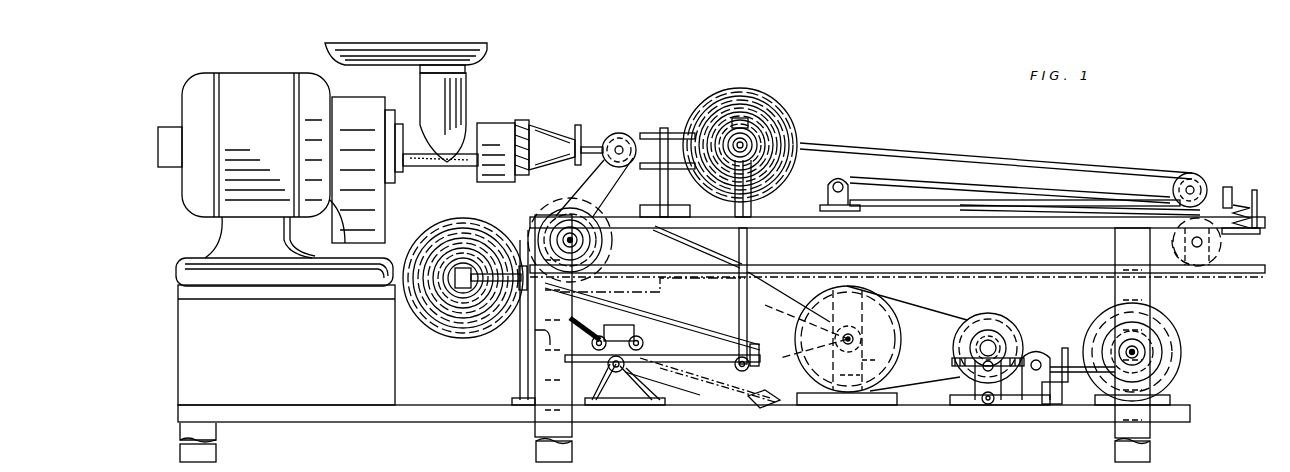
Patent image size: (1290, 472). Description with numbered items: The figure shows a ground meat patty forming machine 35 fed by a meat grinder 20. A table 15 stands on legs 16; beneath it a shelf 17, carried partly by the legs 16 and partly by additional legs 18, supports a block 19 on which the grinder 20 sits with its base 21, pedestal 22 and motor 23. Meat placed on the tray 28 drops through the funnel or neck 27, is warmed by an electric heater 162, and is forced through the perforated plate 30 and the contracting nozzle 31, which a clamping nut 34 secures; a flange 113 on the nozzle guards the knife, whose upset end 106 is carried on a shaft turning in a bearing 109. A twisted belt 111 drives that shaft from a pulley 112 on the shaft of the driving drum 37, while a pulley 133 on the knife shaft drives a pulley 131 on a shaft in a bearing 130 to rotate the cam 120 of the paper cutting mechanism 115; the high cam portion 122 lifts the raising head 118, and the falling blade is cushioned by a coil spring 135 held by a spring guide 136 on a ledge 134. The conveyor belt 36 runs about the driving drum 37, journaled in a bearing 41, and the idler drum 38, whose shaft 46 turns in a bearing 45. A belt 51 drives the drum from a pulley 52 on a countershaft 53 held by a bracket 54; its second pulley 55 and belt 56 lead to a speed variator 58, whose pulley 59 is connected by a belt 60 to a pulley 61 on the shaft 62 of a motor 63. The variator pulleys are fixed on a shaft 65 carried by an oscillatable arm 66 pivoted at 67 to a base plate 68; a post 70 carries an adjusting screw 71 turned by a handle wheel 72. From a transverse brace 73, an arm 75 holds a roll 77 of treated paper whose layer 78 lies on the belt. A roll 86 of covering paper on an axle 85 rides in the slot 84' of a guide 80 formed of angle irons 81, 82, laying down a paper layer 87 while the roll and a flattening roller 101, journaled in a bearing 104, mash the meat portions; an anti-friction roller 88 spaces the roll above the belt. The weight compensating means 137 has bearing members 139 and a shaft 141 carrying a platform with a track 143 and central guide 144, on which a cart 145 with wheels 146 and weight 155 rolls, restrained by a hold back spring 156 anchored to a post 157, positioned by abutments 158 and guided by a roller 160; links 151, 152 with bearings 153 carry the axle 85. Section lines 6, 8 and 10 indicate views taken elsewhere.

The meat grinder 20 is at (175, 62).
The motor 23 is at (258, 88).
The pedestal 22 is at (236, 244).
The base 21 is at (188, 262).
The supporting block 19 is at (388, 355).
The additional legs or supports 18 is at (218, 440).
The shelf 17 is at (442, 424).
The legs or supports 16 is at (572, 452).
The table 15 is at (958, 222).
The conveyor belt 36 is at (1022, 266).
The tray 28 is at (488, 48).
The feeding funnel or neck 27 is at (466, 95).
The electric heater 162 is at (520, 115).
The perforated plate 30 is at (531, 128).
The delivery nozzle 31 is at (548, 140).
The clamping nut 34 is at (530, 172).
The section line 10 is at (519, 203).
The arm 75 is at (463, 325).
The roll of treated paper 77 is at (488, 338).
The section line 6 is at (512, 326).
The bearing 41 is at (615, 242).
The pulley 112 is at (616, 250).
The upset end of knife 106 is at (620, 132).
The flange 113 is at (592, 125).
The bearing 109 is at (664, 128).
The pulley 133 is at (680, 125).
The belt 111 is at (595, 198).
The guide 80 is at (720, 110).
The guiding slot 84' is at (763, 110).
The anti-friction bearing 153 is at (752, 140).
The shaft or axle 85 is at (758, 150).
The roll of prepared paper 86 is at (770, 162).
The angle iron 81 is at (703, 224).
The angle iron 82 is at (802, 230).
The section line 8 is at (722, 469).
The arm or link 152 is at (774, 466).
The bearing 130 is at (1010, 158).
The patty forming machine 35 is at (968, 106).
The flattener or masher roller 101 is at (852, 165).
The bearing 104 is at (852, 188).
The paper layer 87 is at (932, 200).
The paper layer 78 is at (1005, 205).
The cam 120 is at (1150, 188).
The pulley 131 is at (1192, 172).
The severing or cutting mechanism 115 is at (1240, 125).
The raising head 118 is at (1227, 185).
The compressible coil spring 135 is at (1242, 200).
The spring guide 136 is at (1258, 195).
The ledge 134 is at (1240, 235).
The idler pulley or drum 38 is at (1222, 258).
The shaft 46 is at (1200, 268).
The bearing 45 is at (1235, 272).
The high arcuate portion 122 is at (1160, 236).
The belt 51 is at (778, 292).
The conveyor belt driving drum 37 is at (697, 247).
The transverse brace 73 is at (598, 282).
The wheels 146 is at (648, 328).
The weight 155 is at (650, 312).
The weight compensating means 137 is at (655, 340).
The miniature cart 145 is at (612, 330).
The hold back spring 156 is at (550, 341).
The abutments 158 is at (586, 375).
The shaft 141 is at (615, 398).
The lateral guiding anti-friction roller 160 is at (652, 378).
The central guide member 144 is at (712, 380).
The bearing members 139 is at (655, 405).
The longitudinal track member 143 is at (760, 372).
The pulley 52 is at (855, 318).
The countershaft 53 is at (855, 339).
The bracket 54 is at (878, 358).
The second pulley 55 is at (905, 340).
The belt 56 is at (940, 298).
The second pulley of speed variator 59 is at (985, 330).
The shaft 65 is at (992, 350).
The oscillatable arm 66 is at (968, 405).
The pivot 67 is at (988, 406).
The base plate 68 is at (1025, 410).
The post 70 is at (1040, 352).
The handle wheel 72 is at (1068, 385).
The adjusting screw 71 is at (1062, 410).
The speed variator 58 is at (1092, 292).
The belt 60 is at (1115, 320).
The motor 63 is at (1172, 332).
The shaft 62 is at (1143, 348).
The pulley 61 is at (1138, 358).
The arm or link 151 is at (762, 240).
The anti-friction roller 88 is at (344, 466).
The post 157 is at (527, 368).